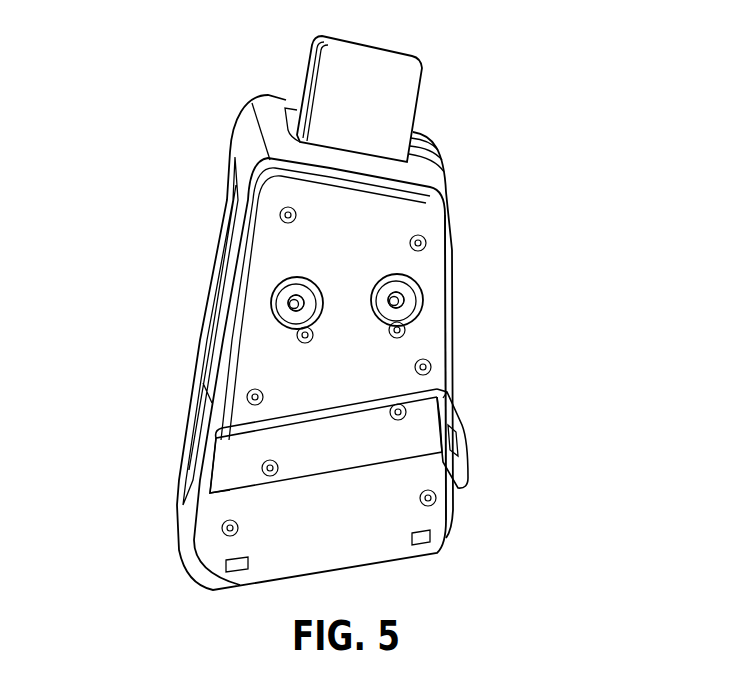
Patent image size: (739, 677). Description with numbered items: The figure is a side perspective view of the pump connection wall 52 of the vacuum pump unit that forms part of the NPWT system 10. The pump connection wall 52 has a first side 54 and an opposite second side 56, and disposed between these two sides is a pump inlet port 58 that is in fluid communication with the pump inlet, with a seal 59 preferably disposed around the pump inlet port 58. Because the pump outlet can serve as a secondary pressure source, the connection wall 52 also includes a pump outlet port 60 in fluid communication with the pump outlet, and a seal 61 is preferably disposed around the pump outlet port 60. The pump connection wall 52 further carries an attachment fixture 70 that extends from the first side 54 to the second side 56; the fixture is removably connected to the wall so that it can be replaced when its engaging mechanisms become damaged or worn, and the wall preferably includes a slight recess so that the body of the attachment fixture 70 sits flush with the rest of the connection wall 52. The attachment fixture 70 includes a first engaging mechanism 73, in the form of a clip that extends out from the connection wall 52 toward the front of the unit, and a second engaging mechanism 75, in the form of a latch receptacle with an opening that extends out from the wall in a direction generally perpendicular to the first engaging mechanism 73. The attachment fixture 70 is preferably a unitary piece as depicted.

The NPWT system 10 is at (252, 123).
The pump connection wall 52 is at (385, 216).
The first side 54 is at (240, 298).
The second side 56 is at (440, 345).
The pump inlet port 58 is at (290, 306).
The seal 59 is at (297, 288).
The pump outlet port 60 is at (403, 298).
The seal 61 is at (383, 288).
The attachment fixture 70 is at (330, 432).
The first engaging mechanism 73 is at (212, 460).
The second engaging mechanism 75 is at (468, 458).